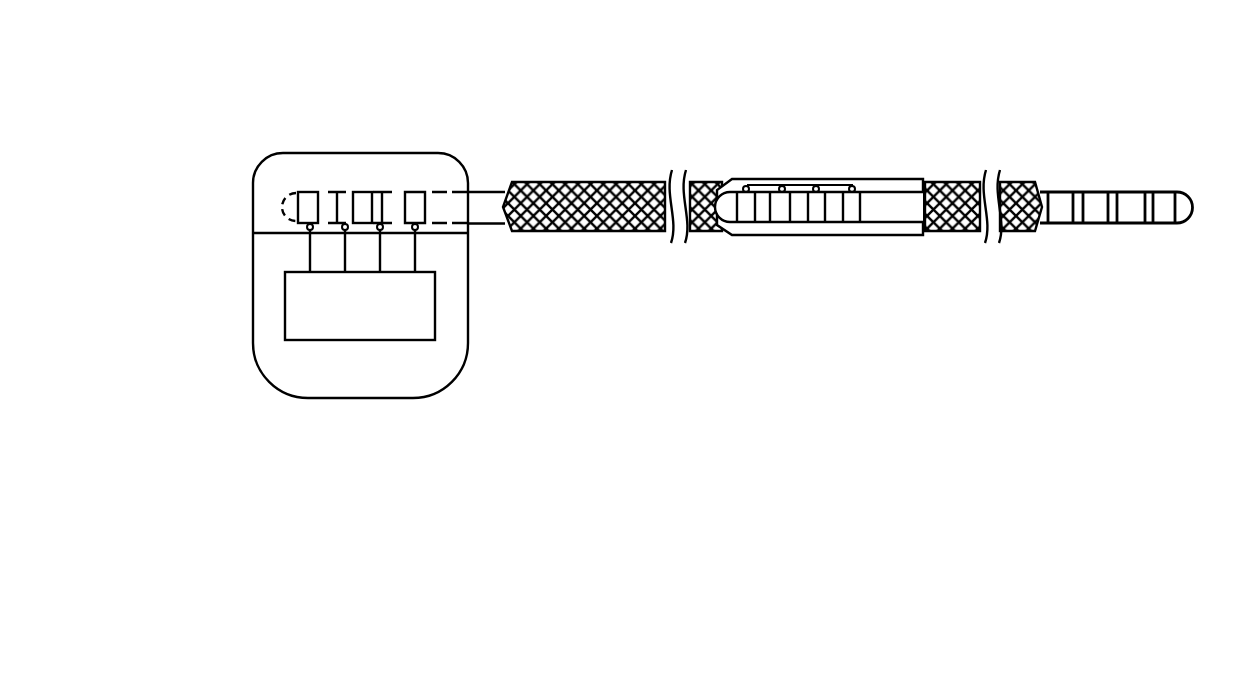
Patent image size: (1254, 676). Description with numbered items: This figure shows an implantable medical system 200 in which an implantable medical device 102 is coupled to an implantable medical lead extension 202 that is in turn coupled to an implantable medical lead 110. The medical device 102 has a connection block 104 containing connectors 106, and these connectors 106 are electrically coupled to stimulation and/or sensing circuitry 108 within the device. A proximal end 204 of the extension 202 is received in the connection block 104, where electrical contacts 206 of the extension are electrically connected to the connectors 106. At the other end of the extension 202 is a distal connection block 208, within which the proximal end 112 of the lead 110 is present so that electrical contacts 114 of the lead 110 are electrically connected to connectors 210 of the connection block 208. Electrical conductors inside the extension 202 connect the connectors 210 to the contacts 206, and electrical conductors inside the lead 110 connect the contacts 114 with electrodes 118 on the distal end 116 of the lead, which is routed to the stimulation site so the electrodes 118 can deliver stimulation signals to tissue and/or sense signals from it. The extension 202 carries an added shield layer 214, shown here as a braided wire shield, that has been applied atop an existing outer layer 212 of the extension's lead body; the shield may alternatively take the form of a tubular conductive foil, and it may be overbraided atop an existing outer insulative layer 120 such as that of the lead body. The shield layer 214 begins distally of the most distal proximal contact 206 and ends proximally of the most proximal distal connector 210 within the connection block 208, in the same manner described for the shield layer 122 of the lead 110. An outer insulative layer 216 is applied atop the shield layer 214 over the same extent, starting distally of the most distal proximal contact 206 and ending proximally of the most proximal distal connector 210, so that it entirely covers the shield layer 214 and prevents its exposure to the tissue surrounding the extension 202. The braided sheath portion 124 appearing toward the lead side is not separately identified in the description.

The implantable medical system 200 is at (645, 96).
The implantable medical device 102 is at (353, 402).
The connection block 104 is at (262, 190).
The connectors 106 is at (306, 227).
The stimulation and/or sensing circuitry 108 is at (284, 325).
The implantable medical lead 110 is at (1043, 188).
The proximal end 112 is at (725, 209).
The electrical contacts 114 is at (850, 217).
The distal end 116 is at (1188, 187).
The electrodes 118 is at (1062, 198).
The outer layer 120 is at (913, 200).
The shield layer 122 is at (923, 213).
The braided sheath of distal lead 124 is at (967, 233).
The implantable medical lead extension 202 is at (485, 172).
The proximal end 204 is at (296, 190).
The electrical contacts 206 is at (415, 197).
The distal connection block 208 is at (730, 177).
The connectors 210 is at (747, 187).
The outer layer 212 is at (493, 200).
The shield layer 214 is at (503, 210).
The outer insulative layer 216 is at (570, 233).